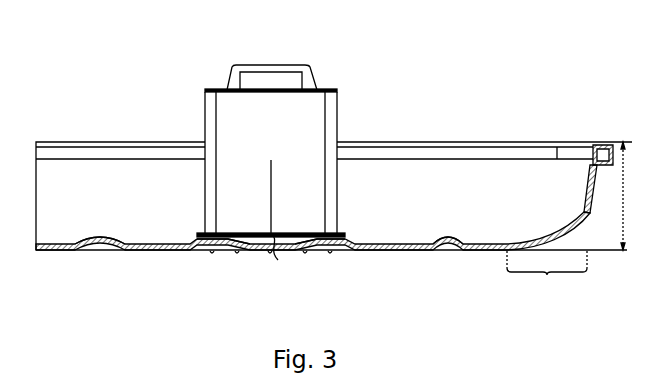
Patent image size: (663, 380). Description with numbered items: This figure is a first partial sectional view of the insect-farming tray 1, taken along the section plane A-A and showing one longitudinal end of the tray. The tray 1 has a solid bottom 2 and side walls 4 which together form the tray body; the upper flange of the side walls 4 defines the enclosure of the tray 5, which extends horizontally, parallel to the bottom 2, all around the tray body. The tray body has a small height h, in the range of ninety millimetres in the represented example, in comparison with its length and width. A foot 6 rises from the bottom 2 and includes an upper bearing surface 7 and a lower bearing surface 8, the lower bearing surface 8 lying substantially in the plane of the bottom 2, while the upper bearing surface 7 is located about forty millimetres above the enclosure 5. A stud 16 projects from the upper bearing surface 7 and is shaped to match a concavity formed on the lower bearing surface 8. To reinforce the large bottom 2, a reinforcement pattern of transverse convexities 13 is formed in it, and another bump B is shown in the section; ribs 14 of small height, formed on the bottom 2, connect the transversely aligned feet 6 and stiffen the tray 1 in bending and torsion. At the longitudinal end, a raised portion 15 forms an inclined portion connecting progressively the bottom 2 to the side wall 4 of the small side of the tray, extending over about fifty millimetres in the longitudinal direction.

The tray 1 is at (45, 80).
The bottom 2 is at (155, 251).
The side walls 4 is at (423, 170).
The enclosure of the tray 5 is at (103, 141).
The foot 6 is at (315, 117).
The upper bearing surface 7 is at (330, 88).
The lower bearing surface 8 is at (228, 252).
The convexities 13 is at (100, 237).
The ribs 14 is at (277, 250).
The raised portion 15 is at (547, 274).
The stud 16 is at (268, 72).
The bead B is at (443, 237).
The height of the tray body h is at (628, 196).
The section plane A-A is at (296, 237).